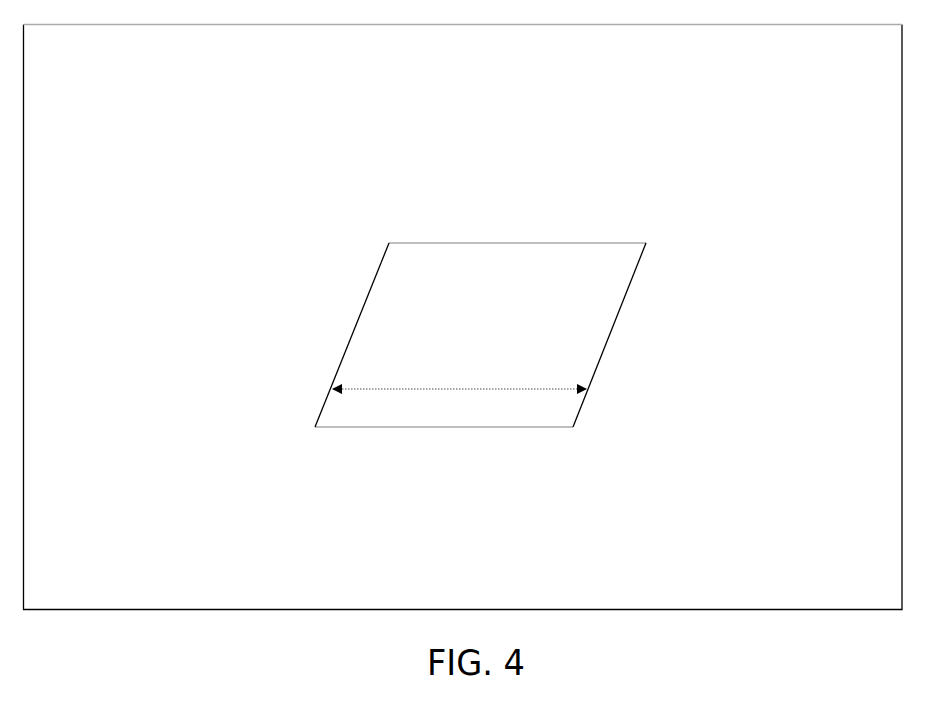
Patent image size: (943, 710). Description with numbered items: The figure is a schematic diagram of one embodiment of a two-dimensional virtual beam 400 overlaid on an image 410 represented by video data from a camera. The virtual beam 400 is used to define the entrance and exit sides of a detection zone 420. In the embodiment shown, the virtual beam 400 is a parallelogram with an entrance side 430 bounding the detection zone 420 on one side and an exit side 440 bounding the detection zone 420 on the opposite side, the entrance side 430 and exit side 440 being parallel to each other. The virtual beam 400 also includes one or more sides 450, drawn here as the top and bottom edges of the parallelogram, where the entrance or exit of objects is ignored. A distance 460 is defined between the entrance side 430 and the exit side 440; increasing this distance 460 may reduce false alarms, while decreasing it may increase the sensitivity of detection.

The two-dimensional virtual beam 400 is at (369, 218).
The image 410 is at (483, 62).
The detection zone 420 is at (483, 292).
The entrance side 430 is at (613, 326).
The exit side 440 is at (357, 315).
The sides 450 is at (498, 237).
The distance 460 is at (422, 389).